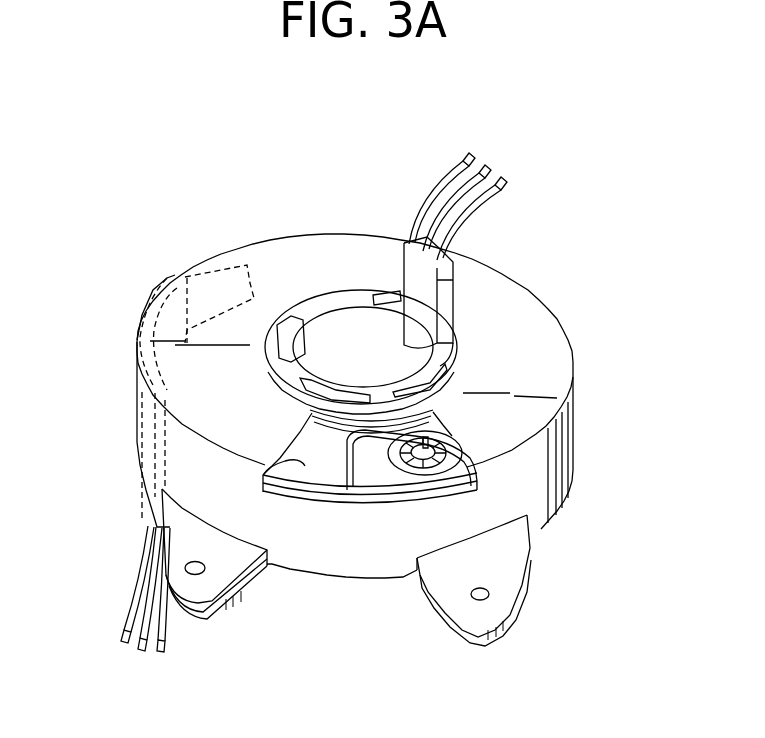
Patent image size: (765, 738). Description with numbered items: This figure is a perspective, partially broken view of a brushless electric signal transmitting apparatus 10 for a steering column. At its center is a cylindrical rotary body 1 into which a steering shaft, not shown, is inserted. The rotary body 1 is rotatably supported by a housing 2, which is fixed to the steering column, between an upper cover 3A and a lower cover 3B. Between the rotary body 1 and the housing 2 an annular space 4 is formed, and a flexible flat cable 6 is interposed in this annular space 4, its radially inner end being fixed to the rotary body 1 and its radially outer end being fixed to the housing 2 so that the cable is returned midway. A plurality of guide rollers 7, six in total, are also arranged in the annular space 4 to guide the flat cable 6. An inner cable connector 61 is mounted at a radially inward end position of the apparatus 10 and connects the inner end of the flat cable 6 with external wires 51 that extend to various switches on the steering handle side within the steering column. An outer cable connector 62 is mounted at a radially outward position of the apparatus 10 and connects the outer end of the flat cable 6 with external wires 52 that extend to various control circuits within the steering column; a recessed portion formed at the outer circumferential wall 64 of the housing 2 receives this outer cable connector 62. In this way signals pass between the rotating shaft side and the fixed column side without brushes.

The brushless electric signal transmitting apparatus 10 is at (371, 147).
The rotary body 1 is at (313, 303).
The housing 2 is at (318, 488).
The upper cover 3A is at (557, 338).
The lower cover 3B is at (543, 526).
The annular space 4 is at (280, 468).
The flexible flat cable 6 is at (303, 460).
The guide rollers 7 is at (435, 443).
The external wires 51 is at (431, 204).
The external wires 52 is at (140, 579).
The inner cable connector 61 is at (450, 302).
The outer cable connector 62 is at (146, 499).
The outer circumferential wall 64 is at (185, 276).